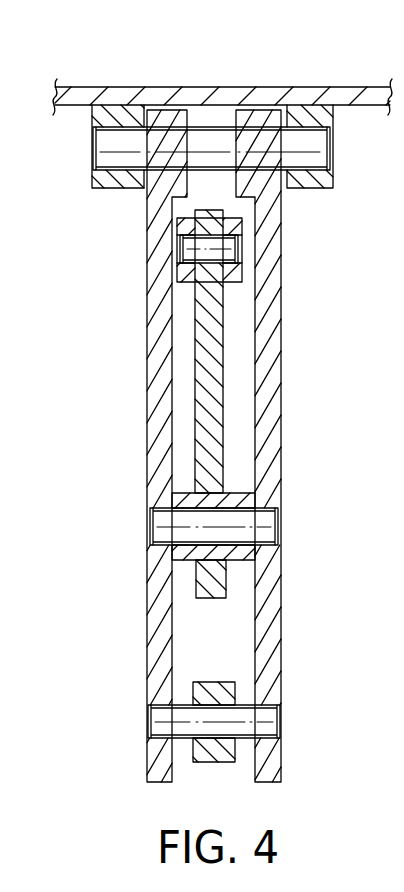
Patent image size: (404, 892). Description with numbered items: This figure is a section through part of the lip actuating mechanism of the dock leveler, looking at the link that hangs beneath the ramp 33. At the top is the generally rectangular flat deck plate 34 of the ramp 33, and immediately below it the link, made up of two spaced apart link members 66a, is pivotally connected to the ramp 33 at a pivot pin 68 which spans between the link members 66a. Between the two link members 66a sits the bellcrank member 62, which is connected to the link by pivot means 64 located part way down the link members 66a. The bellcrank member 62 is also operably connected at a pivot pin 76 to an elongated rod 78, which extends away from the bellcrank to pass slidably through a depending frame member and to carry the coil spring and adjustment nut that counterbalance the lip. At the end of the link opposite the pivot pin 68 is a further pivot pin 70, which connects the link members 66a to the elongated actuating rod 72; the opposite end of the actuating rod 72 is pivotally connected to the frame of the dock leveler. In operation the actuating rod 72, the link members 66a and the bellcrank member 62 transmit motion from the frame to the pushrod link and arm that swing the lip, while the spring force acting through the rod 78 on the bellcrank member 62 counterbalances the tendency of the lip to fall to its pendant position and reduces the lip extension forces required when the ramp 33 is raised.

The dock leveler ramp 33 is at (335, 84).
The deck plate 34 is at (183, 87).
The pivot pin 68 is at (318, 147).
The link members 66a is at (147, 372).
The bellcrank member 62 is at (225, 323).
The elongated rod 78 is at (189, 280).
The pivot pin 76 is at (225, 248).
The pivot means 64 is at (263, 522).
The pivot pin 70 is at (163, 714).
The actuating rod 72 is at (232, 762).